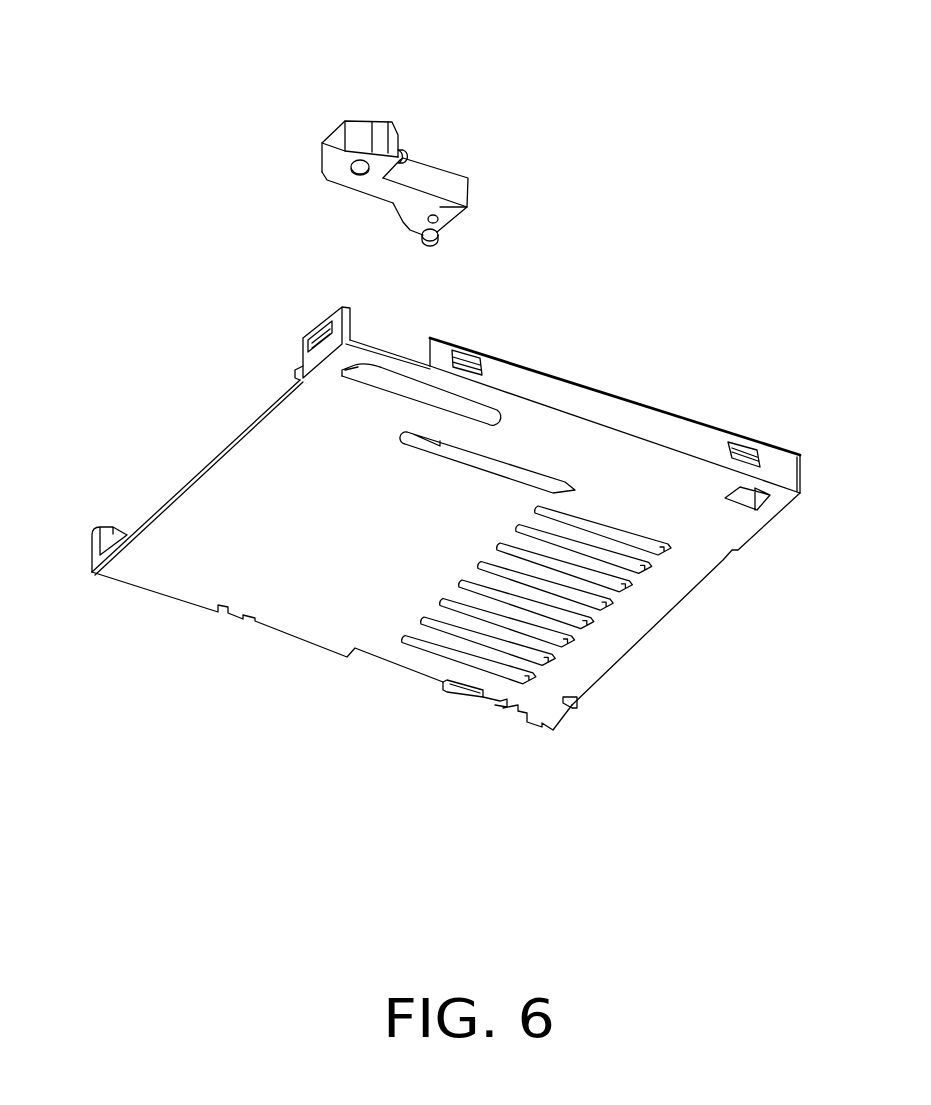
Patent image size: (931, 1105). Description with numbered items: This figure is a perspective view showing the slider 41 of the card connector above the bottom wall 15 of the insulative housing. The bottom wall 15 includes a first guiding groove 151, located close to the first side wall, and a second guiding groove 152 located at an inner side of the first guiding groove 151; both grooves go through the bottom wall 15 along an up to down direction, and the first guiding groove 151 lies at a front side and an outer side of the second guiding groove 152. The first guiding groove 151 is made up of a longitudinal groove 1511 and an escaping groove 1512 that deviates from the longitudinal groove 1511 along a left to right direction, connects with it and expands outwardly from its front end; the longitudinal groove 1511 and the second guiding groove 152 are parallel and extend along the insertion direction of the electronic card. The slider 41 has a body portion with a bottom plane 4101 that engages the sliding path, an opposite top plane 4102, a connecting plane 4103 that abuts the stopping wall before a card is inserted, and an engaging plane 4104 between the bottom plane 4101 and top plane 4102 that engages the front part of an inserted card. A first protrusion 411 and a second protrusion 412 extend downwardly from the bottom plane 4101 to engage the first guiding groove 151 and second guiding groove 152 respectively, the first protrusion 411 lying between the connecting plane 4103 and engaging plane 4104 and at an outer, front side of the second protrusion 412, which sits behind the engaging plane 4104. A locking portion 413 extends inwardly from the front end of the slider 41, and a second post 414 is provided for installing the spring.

The bottom wall 15 is at (421, 518).
The first guiding groove 151 is at (342, 375).
The longitudinal groove 1511 is at (418, 400).
The escaping groove 1512 is at (343, 370).
The second guiding groove 152 is at (530, 478).
The slider 41 is at (378, 142).
The first protrusion 411 is at (363, 172).
The second protrusion 412 is at (436, 240).
The locking portion 413 is at (323, 188).
The second post 414 is at (404, 152).
The bottom plane 4101 is at (463, 207).
The top plane 4102 is at (440, 163).
The connecting plane 4103 is at (337, 143).
The engaging plane 4104 is at (400, 218).